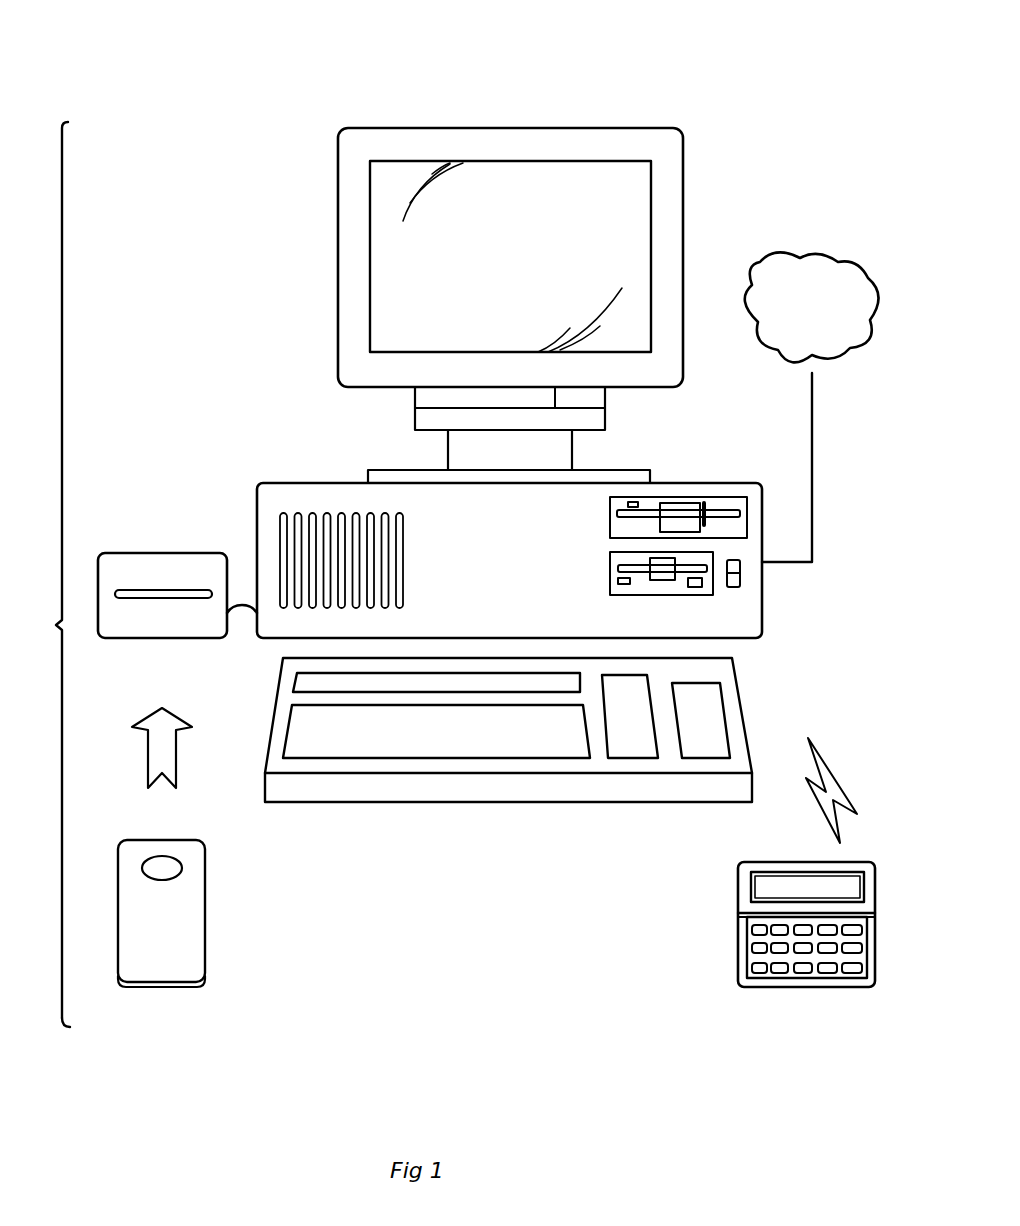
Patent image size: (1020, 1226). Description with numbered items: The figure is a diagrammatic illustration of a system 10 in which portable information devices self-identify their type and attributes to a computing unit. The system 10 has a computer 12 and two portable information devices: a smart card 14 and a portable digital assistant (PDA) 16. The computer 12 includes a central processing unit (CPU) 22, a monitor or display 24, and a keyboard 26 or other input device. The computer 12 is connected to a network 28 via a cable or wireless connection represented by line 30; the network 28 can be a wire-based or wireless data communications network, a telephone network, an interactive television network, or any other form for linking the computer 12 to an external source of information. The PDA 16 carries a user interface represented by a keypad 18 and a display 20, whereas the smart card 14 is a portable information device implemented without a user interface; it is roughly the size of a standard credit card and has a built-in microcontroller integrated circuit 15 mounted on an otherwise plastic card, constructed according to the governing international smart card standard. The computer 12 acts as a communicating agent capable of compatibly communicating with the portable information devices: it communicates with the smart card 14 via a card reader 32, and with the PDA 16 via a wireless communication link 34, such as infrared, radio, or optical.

The system 10 is at (597, 92).
The computer 12 is at (782, 184).
The smart card 14 is at (175, 935).
The microcontroller integrated circuit 15 is at (167, 871).
The portable digital assistant 16 is at (860, 985).
The keypad 18 is at (752, 930).
The display 20 is at (770, 883).
The central processing unit 22 is at (757, 598).
The monitor 24 is at (680, 257).
The keyboard 26 is at (733, 702).
The network 28 is at (795, 270).
The line 30 is at (812, 455).
The card reader 32 is at (202, 553).
The wireless communication link 34 is at (848, 793).